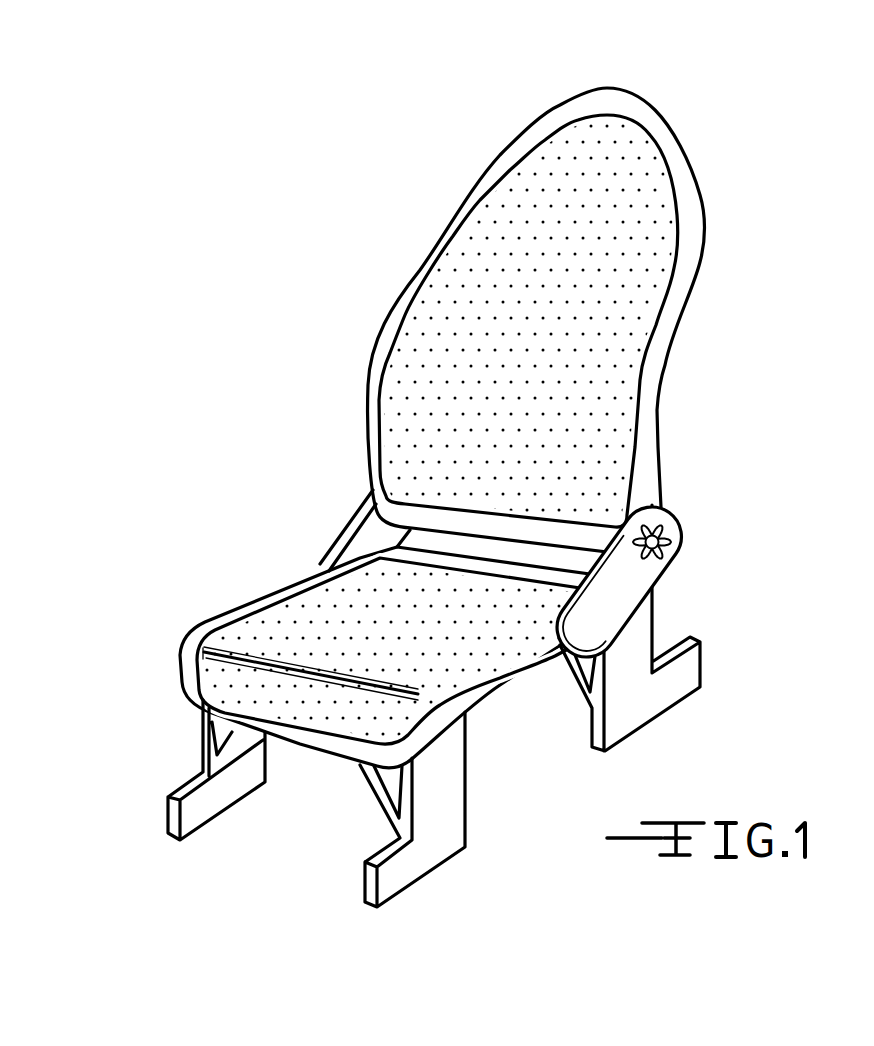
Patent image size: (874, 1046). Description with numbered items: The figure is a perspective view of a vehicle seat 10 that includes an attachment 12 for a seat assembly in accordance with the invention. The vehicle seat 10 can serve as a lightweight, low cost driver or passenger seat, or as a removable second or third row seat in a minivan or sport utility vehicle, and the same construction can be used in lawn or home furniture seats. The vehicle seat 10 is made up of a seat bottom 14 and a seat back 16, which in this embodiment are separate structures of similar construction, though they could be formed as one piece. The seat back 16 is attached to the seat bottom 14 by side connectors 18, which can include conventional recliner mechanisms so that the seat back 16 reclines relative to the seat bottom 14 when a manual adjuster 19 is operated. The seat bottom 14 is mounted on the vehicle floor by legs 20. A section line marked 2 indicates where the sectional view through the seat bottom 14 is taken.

The vehicle seat 10 is at (427, 497).
The attachment 12 is at (283, 572).
The seat bottom 14 is at (220, 682).
The seat back 16 is at (440, 288).
The side connectors 18 is at (363, 527).
The manual adjuster 19 is at (668, 522).
The legs 20 is at (235, 785).
The section line 2- 2 is at (247, 588).